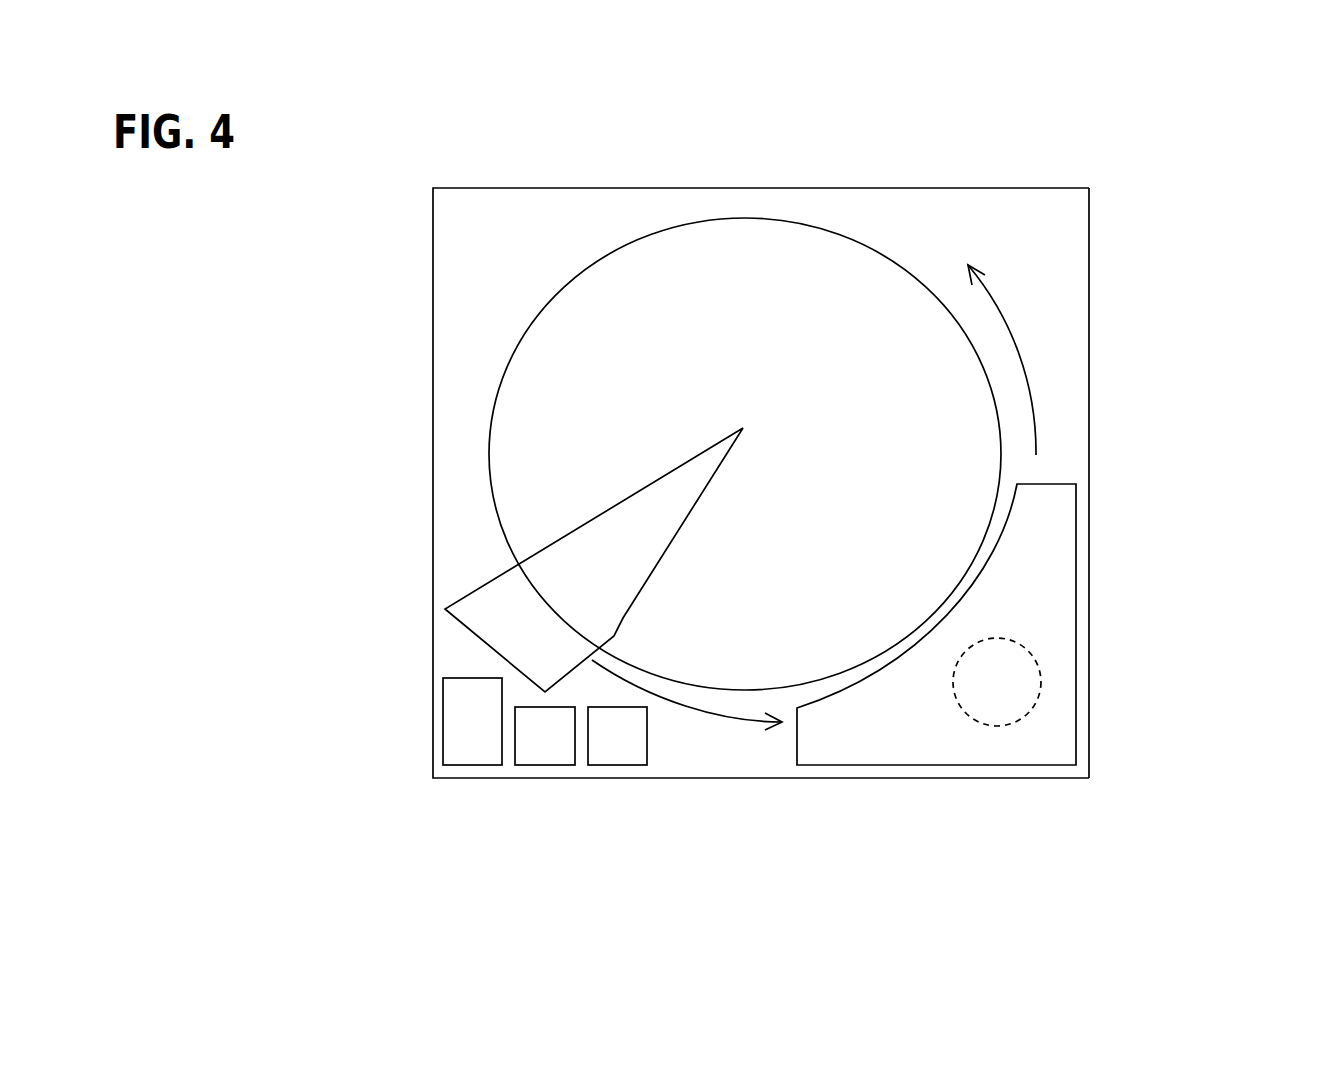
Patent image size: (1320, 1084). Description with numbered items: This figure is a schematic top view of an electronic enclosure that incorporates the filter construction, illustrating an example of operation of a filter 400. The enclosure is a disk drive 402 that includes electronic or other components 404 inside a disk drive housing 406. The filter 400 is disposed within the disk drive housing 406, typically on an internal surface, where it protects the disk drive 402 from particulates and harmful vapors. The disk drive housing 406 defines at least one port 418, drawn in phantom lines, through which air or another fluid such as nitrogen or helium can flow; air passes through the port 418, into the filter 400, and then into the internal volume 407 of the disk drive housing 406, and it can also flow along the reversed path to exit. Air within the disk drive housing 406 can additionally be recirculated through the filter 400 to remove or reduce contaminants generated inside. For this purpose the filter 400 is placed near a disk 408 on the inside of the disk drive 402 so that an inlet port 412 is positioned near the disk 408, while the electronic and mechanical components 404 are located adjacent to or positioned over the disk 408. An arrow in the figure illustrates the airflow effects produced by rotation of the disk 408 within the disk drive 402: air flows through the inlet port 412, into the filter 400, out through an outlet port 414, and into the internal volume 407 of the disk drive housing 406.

The filter 400 is at (1080, 540).
The disk drive 402 is at (468, 158).
The electronic or other components 404 is at (622, 753).
The disk drive housing 406 is at (1090, 288).
The internal volume 407 is at (953, 227).
The disk 408 is at (575, 366).
The inlet port 412 is at (790, 737).
The outlet port 414 is at (1048, 483).
The port 418 is at (972, 722).